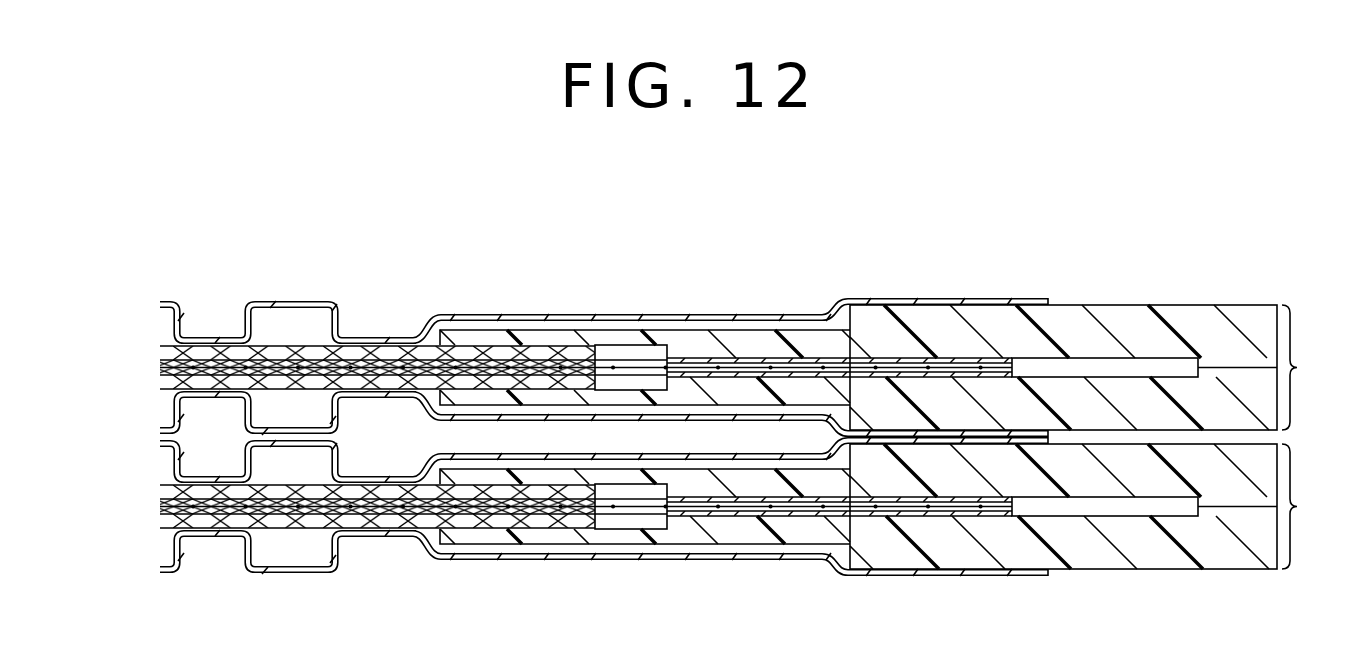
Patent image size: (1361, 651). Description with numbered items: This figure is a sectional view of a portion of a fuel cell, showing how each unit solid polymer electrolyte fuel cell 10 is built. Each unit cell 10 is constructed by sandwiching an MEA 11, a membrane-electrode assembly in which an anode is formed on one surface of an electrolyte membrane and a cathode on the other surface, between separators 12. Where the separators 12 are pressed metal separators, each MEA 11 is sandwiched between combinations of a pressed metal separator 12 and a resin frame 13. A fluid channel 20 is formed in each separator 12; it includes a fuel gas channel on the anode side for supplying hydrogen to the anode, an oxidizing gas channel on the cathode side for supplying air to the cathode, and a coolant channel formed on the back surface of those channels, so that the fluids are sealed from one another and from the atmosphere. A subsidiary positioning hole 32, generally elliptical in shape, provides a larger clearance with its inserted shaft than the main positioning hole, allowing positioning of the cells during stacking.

The unit solid polymer electrolyte fuel cell 10 is at (1094, 437).
The MEA 11 is at (371, 377).
The separator 12 is at (504, 417).
The resin frame 13 is at (703, 343).
The fluid channel 20 is at (303, 405).
The subsidiary positioning hole 32 is at (830, 363).